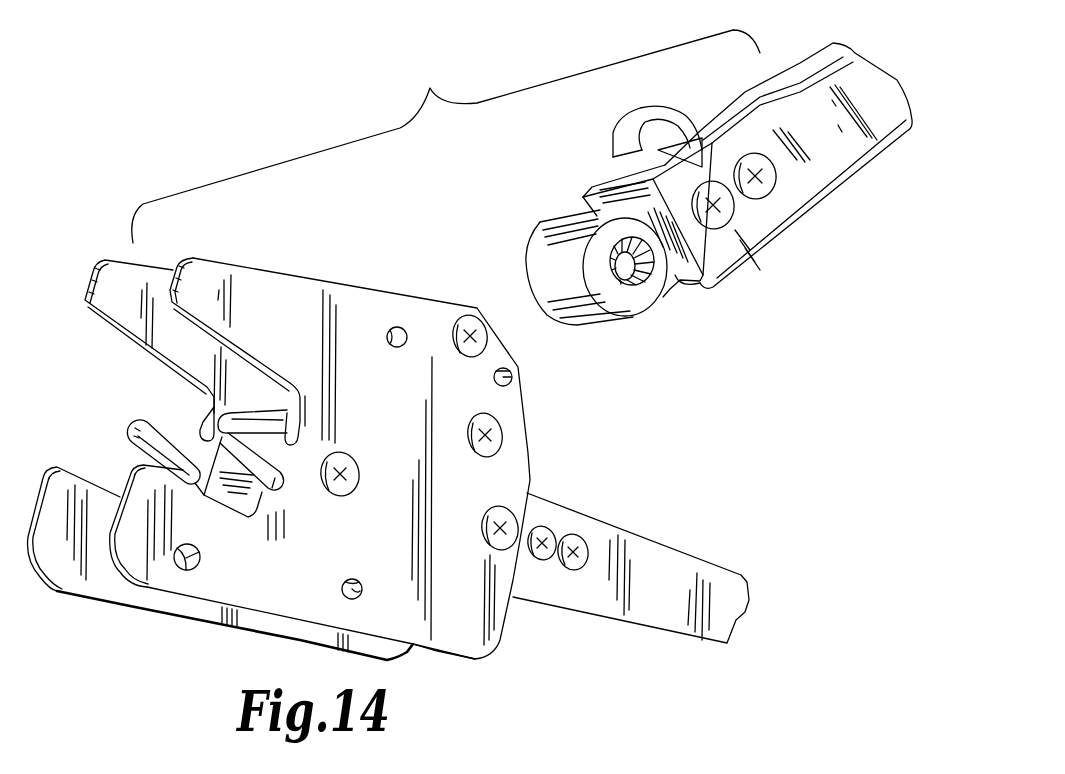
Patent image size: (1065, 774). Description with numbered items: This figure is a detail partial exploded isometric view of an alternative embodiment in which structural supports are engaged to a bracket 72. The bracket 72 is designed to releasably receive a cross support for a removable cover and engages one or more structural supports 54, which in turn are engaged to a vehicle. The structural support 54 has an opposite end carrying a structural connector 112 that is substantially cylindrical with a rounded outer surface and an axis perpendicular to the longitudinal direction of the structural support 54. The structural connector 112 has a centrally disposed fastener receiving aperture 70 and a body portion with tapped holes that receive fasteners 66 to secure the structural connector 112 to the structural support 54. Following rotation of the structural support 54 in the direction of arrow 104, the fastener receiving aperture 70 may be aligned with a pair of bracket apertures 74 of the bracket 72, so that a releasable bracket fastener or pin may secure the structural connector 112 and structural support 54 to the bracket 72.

The bracket 72 is at (368, 307).
The bracket apertures 74 is at (513, 374).
The structural support 54 is at (827, 153).
The fasteners 66 is at (730, 222).
The fastener receiving aperture 70 is at (627, 262).
The structural connector 112 is at (550, 270).
The arrow 104 is at (657, 117).